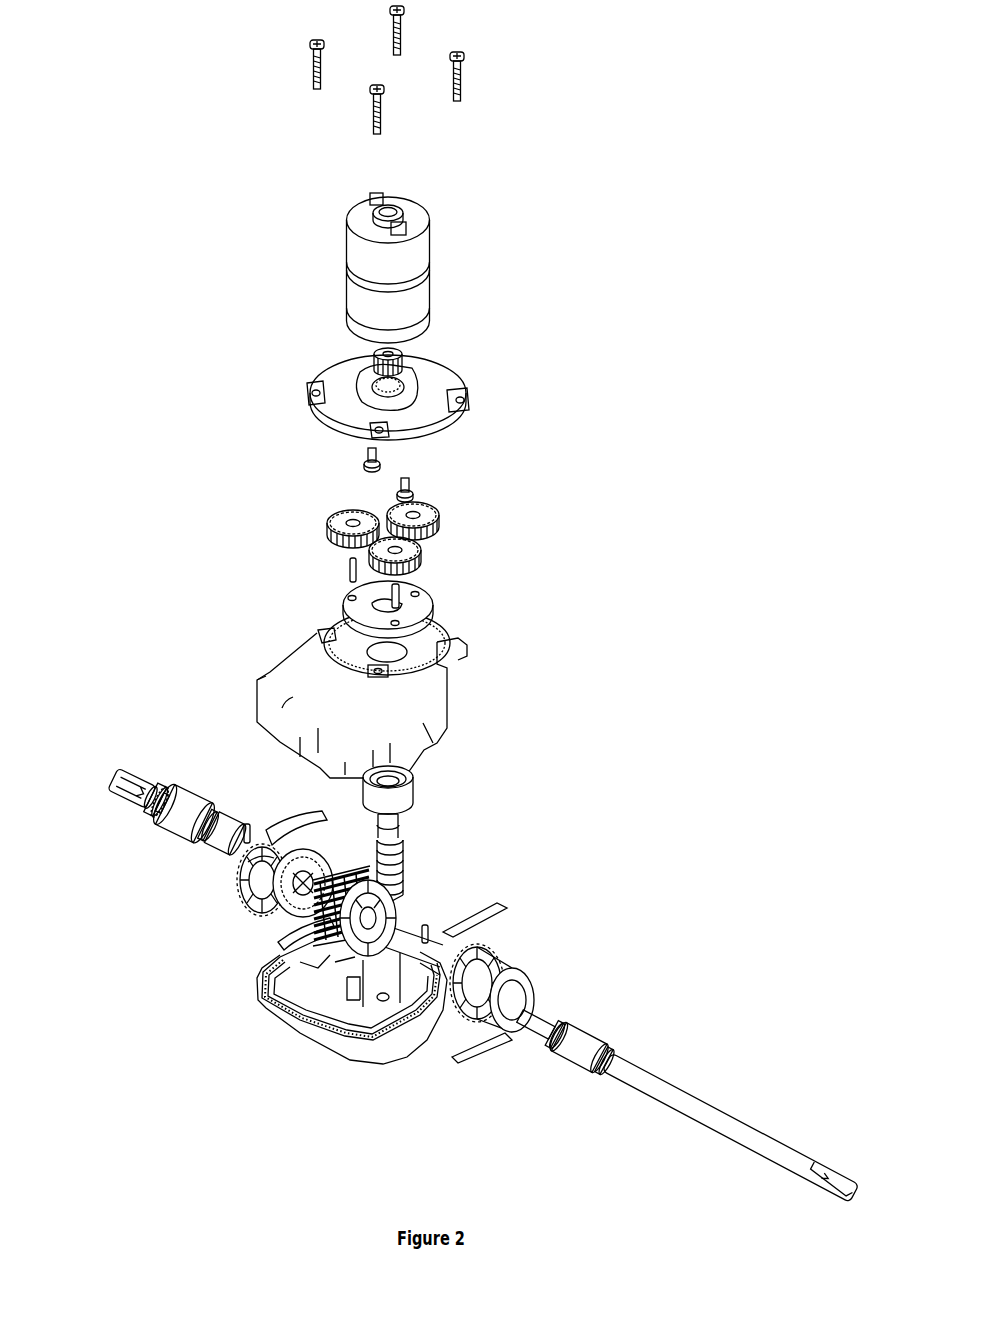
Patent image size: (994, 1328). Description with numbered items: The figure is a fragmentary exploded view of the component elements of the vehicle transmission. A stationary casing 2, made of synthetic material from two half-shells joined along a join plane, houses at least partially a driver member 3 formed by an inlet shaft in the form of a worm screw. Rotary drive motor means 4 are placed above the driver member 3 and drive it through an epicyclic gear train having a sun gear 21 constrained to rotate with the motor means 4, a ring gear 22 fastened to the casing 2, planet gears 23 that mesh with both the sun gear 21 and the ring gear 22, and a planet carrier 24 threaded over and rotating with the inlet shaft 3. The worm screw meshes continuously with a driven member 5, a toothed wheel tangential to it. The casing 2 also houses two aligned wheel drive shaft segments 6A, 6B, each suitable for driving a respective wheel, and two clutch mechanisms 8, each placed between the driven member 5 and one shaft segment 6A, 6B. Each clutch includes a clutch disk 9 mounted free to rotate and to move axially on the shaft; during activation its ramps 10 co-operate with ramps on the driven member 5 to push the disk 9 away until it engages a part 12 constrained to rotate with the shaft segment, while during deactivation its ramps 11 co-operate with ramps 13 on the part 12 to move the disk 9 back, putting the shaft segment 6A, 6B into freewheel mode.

The casing 2 is at (458, 692).
The driver member 3 is at (414, 822).
The motor means 4 is at (440, 266).
The driven member 5 is at (262, 972).
The wheel drive shaft segment 6A is at (139, 770).
The wheel drive shaft segment 6B is at (653, 1104).
The clutch mechanism 8 is at (527, 926).
The clutch disk 9 is at (272, 891).
The ramps 10 is at (276, 913).
The ramps 11 is at (270, 842).
The part 12 is at (541, 967).
The ramps 13 is at (272, 862).
The sun gear 21 is at (410, 358).
The ring gear 22 is at (448, 413).
The planet gears 23 is at (448, 515).
The planet carrier 24 is at (444, 607).